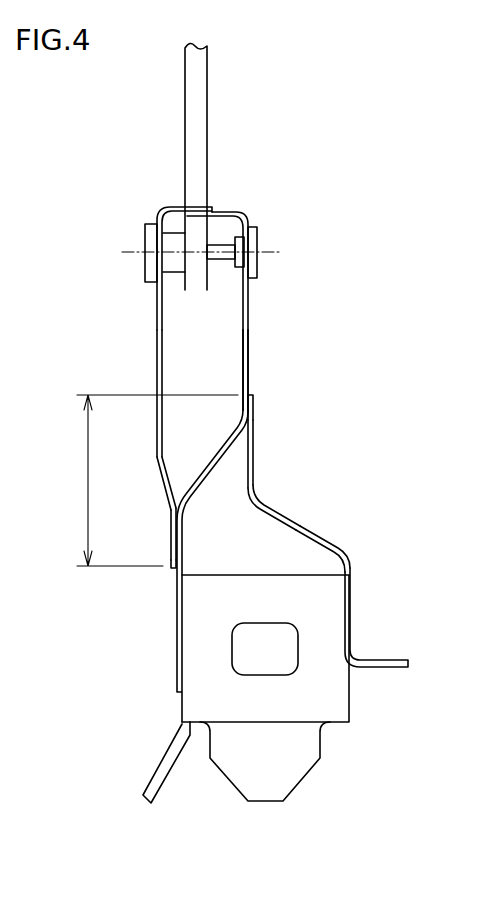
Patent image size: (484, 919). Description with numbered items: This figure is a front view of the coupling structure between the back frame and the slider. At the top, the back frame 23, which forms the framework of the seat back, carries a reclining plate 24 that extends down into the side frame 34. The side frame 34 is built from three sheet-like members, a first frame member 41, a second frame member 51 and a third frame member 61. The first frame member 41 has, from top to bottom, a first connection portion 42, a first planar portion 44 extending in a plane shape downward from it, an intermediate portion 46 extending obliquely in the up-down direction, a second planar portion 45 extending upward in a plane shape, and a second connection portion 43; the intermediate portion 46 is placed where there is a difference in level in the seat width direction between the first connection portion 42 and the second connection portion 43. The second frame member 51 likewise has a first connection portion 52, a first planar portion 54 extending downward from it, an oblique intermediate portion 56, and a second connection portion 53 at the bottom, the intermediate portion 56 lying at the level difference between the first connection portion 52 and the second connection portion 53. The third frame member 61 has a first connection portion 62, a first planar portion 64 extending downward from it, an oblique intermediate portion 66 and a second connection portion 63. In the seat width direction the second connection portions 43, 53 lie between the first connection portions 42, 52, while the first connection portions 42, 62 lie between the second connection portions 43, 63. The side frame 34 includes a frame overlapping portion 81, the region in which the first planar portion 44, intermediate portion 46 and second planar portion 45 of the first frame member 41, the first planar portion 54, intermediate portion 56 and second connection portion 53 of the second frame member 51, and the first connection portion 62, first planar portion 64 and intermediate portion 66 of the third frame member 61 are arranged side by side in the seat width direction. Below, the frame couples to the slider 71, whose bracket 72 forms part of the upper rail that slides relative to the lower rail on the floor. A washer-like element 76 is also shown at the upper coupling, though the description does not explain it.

The back frame 23 is at (240, 166).
The reclining plate 24 is at (195, 125).
The side frame 34 is at (279, 387).
The first frame member 41 is at (260, 321).
The first connection portion 42 is at (243, 257).
The second connection portion 43 is at (176, 627).
The first planar portion 44 is at (248, 352).
The second planar portion 45 is at (168, 552).
The intermediate portion 46 is at (210, 462).
The second frame member 51 is at (146, 320).
The first connection portion 52 is at (160, 257).
The second connection portion 53 is at (168, 525).
The first planar portion 54 is at (158, 353).
The intermediate portion 56 is at (166, 482).
The third frame member 61 is at (300, 514).
The first connection portion 62 is at (252, 407).
The second connection portion 63 is at (355, 624).
The first planar portion 64 is at (252, 440).
The intermediate portion 66 is at (312, 535).
The slider 71 is at (309, 746).
The bracket 72 is at (265, 761).
The washer 76 is at (152, 237).
The frame overlapping portion 81 is at (88, 482).